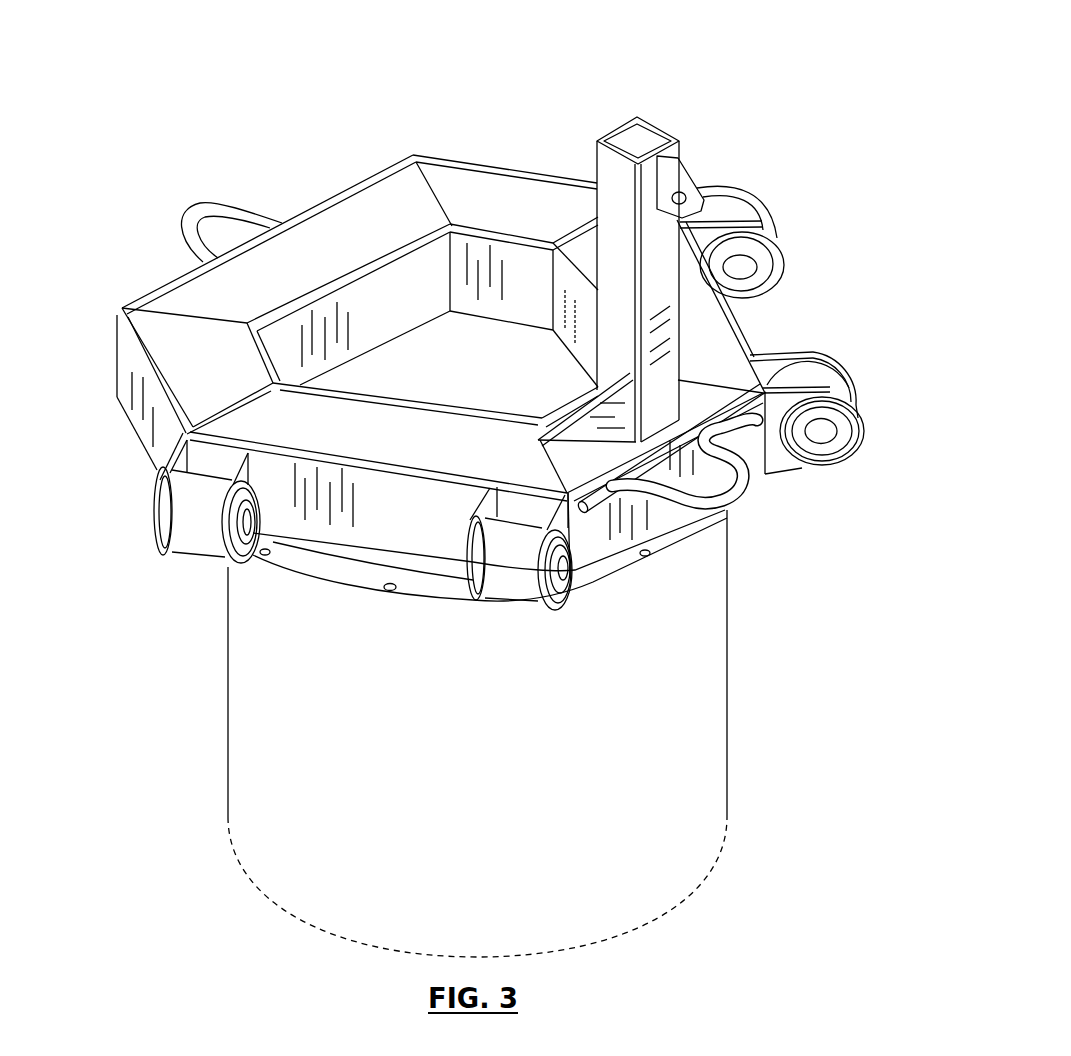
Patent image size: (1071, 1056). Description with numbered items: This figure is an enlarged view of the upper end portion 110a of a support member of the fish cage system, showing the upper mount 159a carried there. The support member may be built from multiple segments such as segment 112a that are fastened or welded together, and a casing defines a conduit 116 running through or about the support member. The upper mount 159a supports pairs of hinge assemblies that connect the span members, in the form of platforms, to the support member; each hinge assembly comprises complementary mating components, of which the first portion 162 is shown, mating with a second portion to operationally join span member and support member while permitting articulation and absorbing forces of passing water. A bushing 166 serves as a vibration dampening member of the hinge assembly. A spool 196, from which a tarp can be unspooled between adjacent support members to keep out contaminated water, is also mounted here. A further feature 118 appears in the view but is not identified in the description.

The upper end portion 110a is at (567, 128).
The segment 112a is at (700, 570).
The conduit 116 is at (402, 350).
The handle loop 118 is at (168, 231).
The upper mount 159a is at (461, 170).
The first portion of hinge assembly 162 is at (736, 190).
The bushing 166 is at (803, 447).
The spool 196 is at (653, 142).